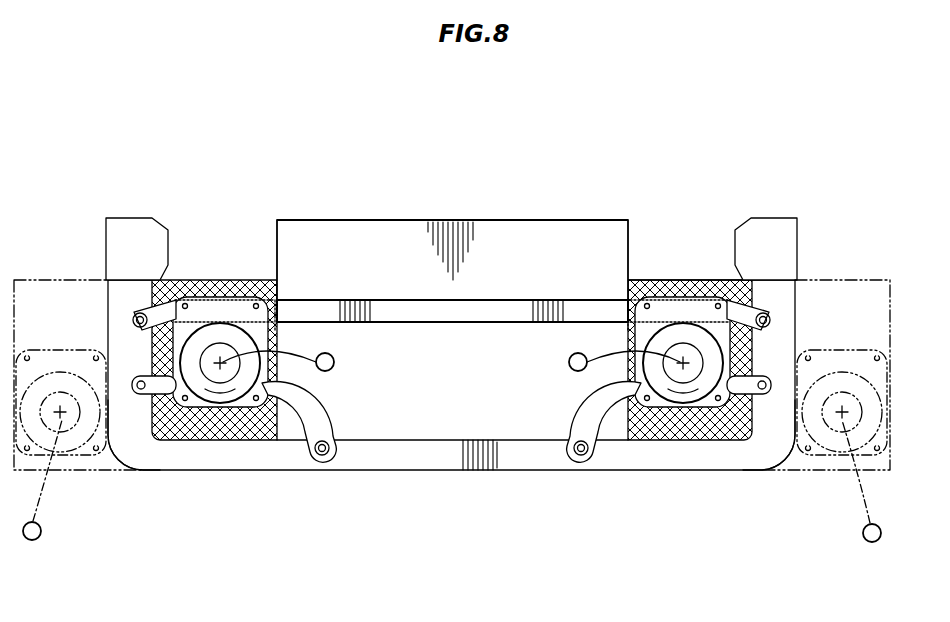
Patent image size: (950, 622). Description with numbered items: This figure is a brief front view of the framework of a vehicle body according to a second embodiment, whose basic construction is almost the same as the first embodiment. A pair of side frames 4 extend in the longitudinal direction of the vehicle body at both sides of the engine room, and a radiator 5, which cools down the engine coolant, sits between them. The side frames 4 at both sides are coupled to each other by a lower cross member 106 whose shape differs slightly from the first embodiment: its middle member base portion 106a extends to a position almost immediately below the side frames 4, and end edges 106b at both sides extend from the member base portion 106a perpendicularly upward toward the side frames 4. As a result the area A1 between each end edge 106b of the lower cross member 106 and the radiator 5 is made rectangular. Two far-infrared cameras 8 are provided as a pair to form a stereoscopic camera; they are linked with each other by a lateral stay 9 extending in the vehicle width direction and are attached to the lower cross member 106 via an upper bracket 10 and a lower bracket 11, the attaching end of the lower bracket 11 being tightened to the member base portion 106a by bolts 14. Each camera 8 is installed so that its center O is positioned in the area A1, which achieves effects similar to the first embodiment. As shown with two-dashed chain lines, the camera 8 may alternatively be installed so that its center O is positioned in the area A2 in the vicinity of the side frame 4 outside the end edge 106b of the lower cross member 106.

The side frames 4 is at (130, 218).
The radiator 5 is at (385, 220).
The far-infrared camera 8 is at (210, 376).
The lateral stay 9 is at (583, 300).
The upper bracket 10 is at (171, 302).
The lower bracket 11 is at (295, 403).
The bolts 14 is at (135, 316).
The lower cross member 106 is at (398, 470).
The member base portion 106a is at (453, 470).
The end edges 106b is at (148, 450).
The area A1 is at (232, 280).
The area A2 is at (103, 462).
The center of the camera O is at (452, 446).